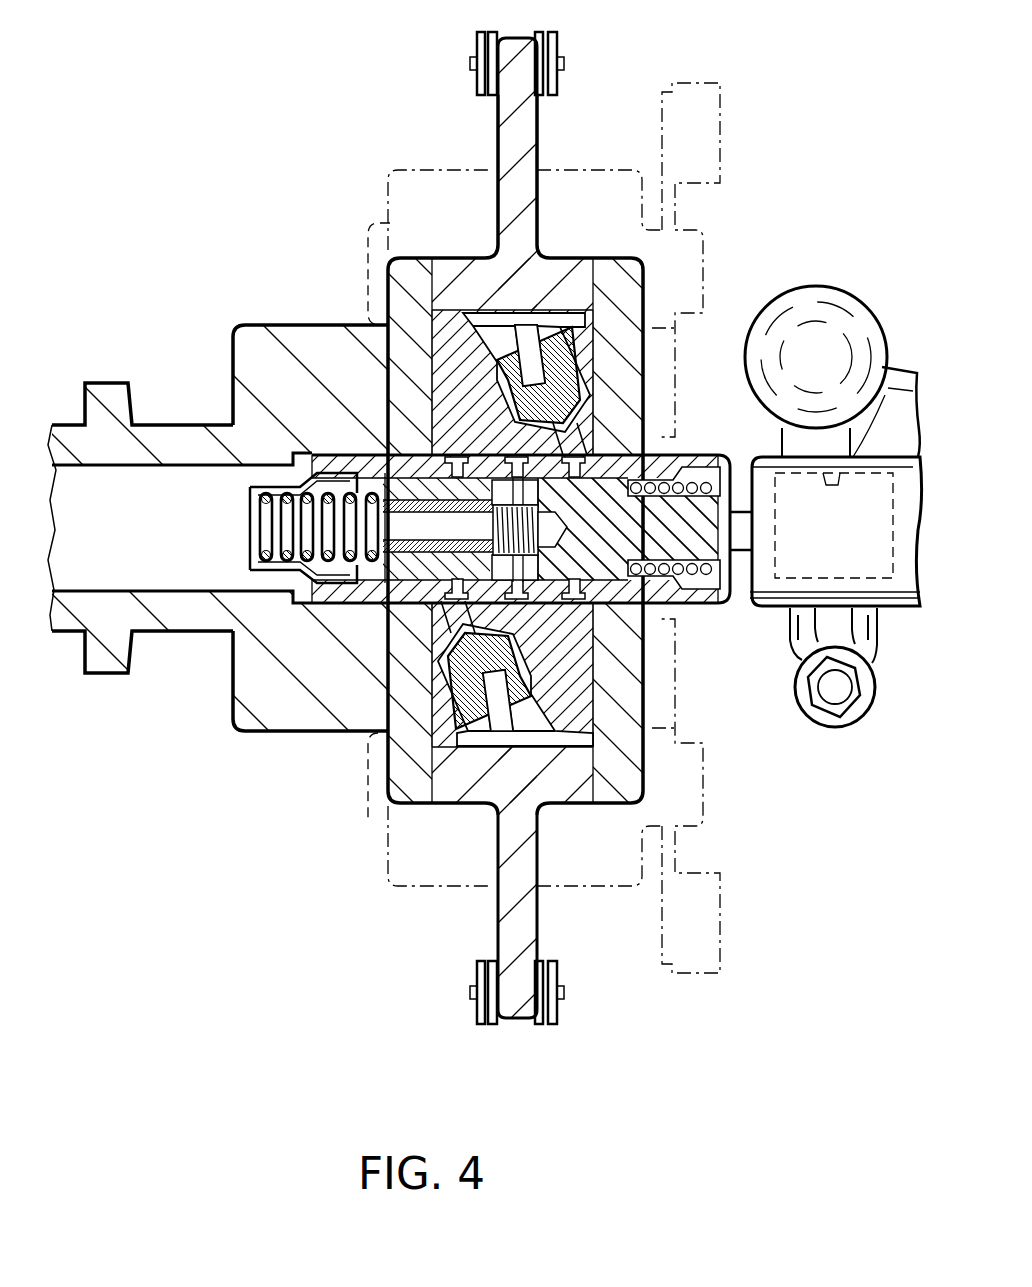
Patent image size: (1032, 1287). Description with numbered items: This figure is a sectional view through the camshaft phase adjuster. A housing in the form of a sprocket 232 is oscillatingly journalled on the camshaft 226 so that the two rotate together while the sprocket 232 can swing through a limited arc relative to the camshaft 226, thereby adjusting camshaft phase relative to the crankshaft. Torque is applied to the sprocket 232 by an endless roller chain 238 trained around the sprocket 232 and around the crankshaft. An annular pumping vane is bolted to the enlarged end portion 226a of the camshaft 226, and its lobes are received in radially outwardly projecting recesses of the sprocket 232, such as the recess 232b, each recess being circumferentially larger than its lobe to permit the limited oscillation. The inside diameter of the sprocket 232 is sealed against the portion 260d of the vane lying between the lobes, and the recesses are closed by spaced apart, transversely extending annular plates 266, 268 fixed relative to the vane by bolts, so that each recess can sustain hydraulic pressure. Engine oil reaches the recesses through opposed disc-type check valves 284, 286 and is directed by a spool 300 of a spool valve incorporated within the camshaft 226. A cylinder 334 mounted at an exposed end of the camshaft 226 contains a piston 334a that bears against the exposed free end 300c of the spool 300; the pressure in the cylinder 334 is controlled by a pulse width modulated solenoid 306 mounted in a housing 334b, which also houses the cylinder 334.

The camshaft 226 is at (168, 425).
The enlarged end portion of the camshaft 226a is at (260, 350).
The sprocket 232 is at (520, 137).
The recess of the sprocket 232b is at (565, 318).
The endless roller chain 238 is at (548, 35).
The portion of the vane between the lobes 260d is at (440, 257).
The annular plate 266 is at (403, 388).
The annular plate 268 is at (633, 447).
The check valve 284 is at (567, 378).
The check valve 286 is at (470, 685).
The spool 300 is at (645, 607).
The exposed free end of the spool 300c is at (836, 531).
The solenoid 306 is at (812, 285).
The cylinder 334 is at (905, 378).
The piston 334a is at (746, 600).
The housing 334b is at (873, 580).